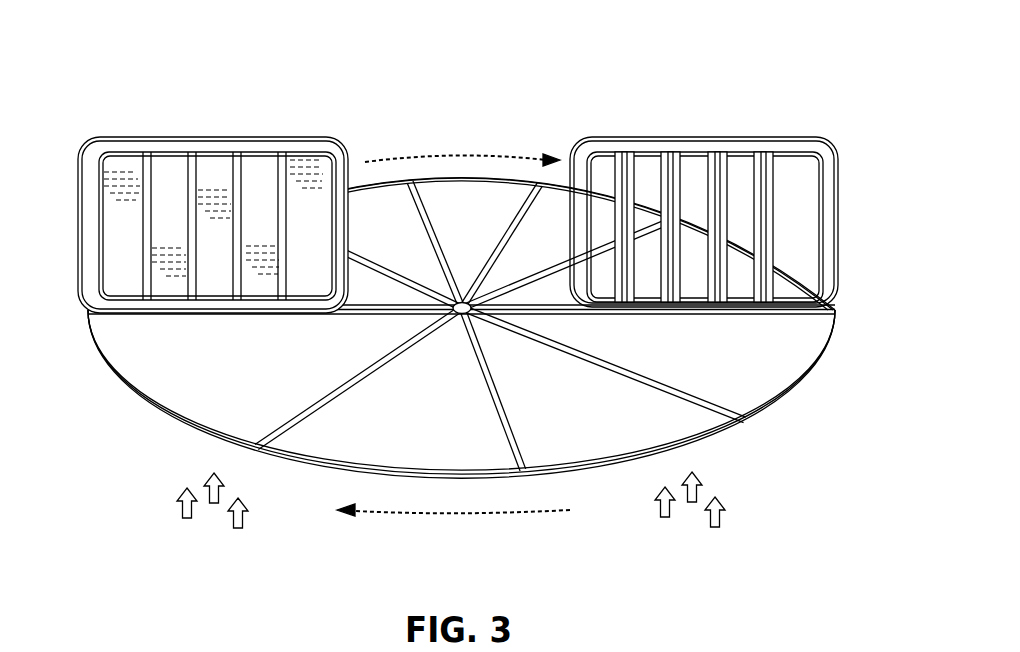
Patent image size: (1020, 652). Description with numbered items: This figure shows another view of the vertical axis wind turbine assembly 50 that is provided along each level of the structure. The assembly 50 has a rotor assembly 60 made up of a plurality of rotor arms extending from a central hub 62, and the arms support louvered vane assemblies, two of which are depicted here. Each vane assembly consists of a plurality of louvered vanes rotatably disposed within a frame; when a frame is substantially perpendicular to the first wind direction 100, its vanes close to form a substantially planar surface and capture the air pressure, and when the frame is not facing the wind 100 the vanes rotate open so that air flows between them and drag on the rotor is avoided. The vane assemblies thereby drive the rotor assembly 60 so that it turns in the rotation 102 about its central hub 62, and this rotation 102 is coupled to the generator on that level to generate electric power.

The vertical axis wind turbine assembly 50 is at (59, 130).
The rotor assembly 60 is at (848, 358).
The central hub 62 is at (462, 316).
The first wind direction 100 is at (723, 502).
The rotation 102 is at (462, 522).